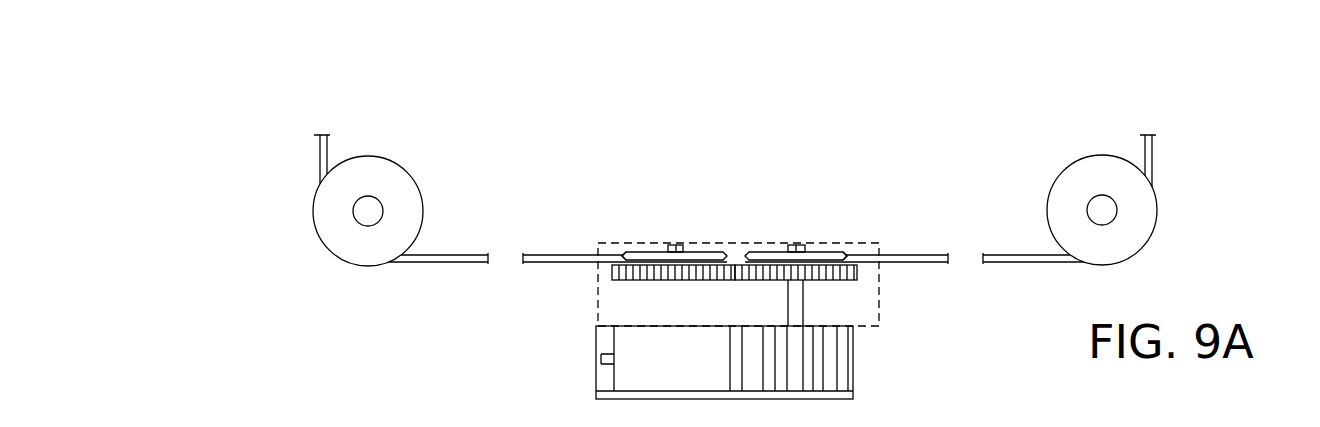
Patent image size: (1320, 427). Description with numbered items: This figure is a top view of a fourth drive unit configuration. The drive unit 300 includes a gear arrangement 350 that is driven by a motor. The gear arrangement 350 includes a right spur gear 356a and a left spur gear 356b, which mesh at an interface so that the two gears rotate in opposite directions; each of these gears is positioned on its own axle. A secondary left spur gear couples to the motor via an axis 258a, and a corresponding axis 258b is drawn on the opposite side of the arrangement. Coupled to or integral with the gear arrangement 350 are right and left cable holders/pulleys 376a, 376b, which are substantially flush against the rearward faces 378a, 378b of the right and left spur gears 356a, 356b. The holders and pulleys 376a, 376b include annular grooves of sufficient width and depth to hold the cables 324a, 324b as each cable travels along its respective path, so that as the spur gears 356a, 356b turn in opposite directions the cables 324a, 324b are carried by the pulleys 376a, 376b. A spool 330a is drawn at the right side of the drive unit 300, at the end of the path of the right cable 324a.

The drive unit 300 is at (240, 130).
The cable 324a is at (1153, 148).
The cable 324b is at (318, 153).
The spool 330a is at (1153, 233).
The gear arrangement 350 is at (508, 328).
The right spur gear 356a is at (835, 273).
The left spur gear 356b is at (635, 273).
The right cable holder/pulley 376a is at (777, 247).
The left cable holder/pulley 376b is at (707, 253).
The rearward face 378a is at (840, 247).
The rearward face 378b is at (625, 263).
The axis 258a is at (800, 245).
The tab 258b is at (673, 247).